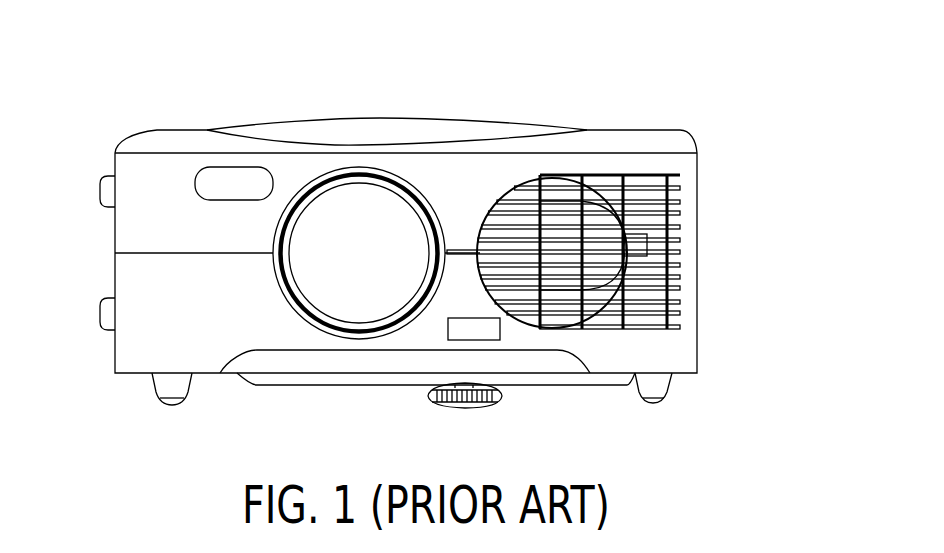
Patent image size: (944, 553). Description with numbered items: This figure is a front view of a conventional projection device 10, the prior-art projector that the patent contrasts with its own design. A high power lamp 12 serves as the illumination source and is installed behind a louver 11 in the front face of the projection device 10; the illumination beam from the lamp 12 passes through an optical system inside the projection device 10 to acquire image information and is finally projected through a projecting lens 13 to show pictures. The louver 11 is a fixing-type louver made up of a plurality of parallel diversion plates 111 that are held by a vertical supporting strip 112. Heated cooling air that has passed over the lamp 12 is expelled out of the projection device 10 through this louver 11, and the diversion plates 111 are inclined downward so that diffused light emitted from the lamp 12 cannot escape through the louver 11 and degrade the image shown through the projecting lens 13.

The projection device 10 is at (120, 133).
The louver 11 is at (637, 193).
The diversion plates 111 is at (680, 228).
The vertical supporting strip 112 is at (680, 212).
The lamp 12 is at (665, 310).
The projection lens 13 is at (350, 167).